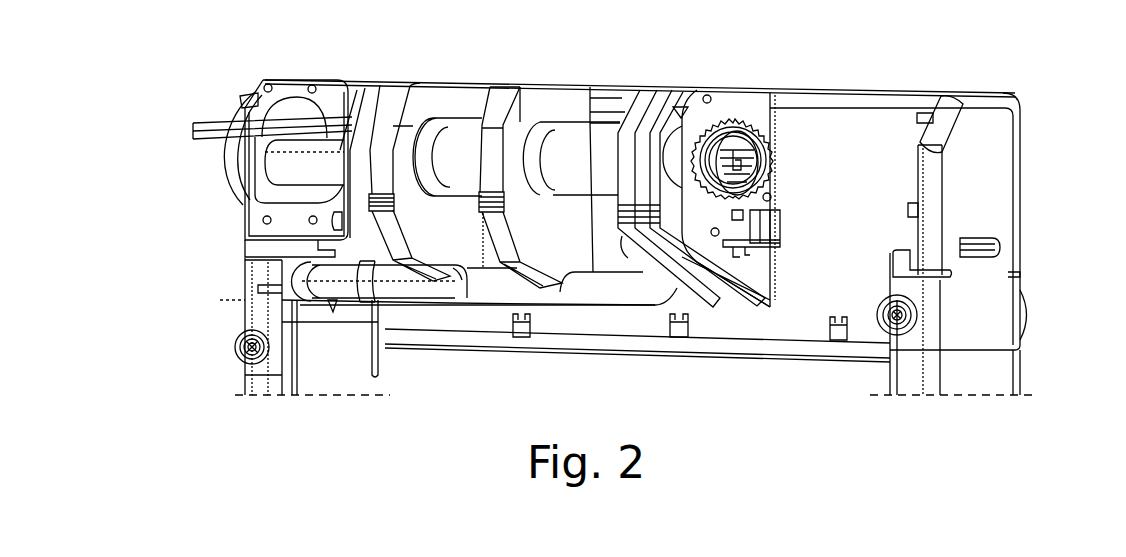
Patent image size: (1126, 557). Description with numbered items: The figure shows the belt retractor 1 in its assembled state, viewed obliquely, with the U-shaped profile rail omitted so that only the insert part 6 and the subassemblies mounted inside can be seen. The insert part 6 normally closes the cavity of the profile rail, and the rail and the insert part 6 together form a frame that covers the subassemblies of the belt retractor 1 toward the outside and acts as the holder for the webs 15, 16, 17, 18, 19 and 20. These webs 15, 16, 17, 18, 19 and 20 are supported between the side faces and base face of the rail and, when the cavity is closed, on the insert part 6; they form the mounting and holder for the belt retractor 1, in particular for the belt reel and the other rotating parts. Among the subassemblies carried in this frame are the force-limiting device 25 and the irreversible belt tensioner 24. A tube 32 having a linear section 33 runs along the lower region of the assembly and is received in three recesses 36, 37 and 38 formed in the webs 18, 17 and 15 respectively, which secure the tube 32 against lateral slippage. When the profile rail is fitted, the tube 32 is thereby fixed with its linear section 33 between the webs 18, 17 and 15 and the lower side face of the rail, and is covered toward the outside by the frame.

The belt retractor 1 is at (639, 66).
The insert part 6 is at (910, 133).
The web 15 is at (257, 220).
The web 16 is at (378, 90).
The web 17 is at (400, 92).
The web 18 is at (503, 100).
The web 19 is at (653, 100).
The web 20 is at (1003, 170).
The irreversible belt tensioner 24 is at (650, 240).
The force-limiting device 25 is at (470, 158).
The tube 32 is at (611, 285).
The linear section 33 is at (477, 356).
The recess 36 is at (570, 280).
The recess 37 is at (480, 263).
The recess 38 is at (310, 303).